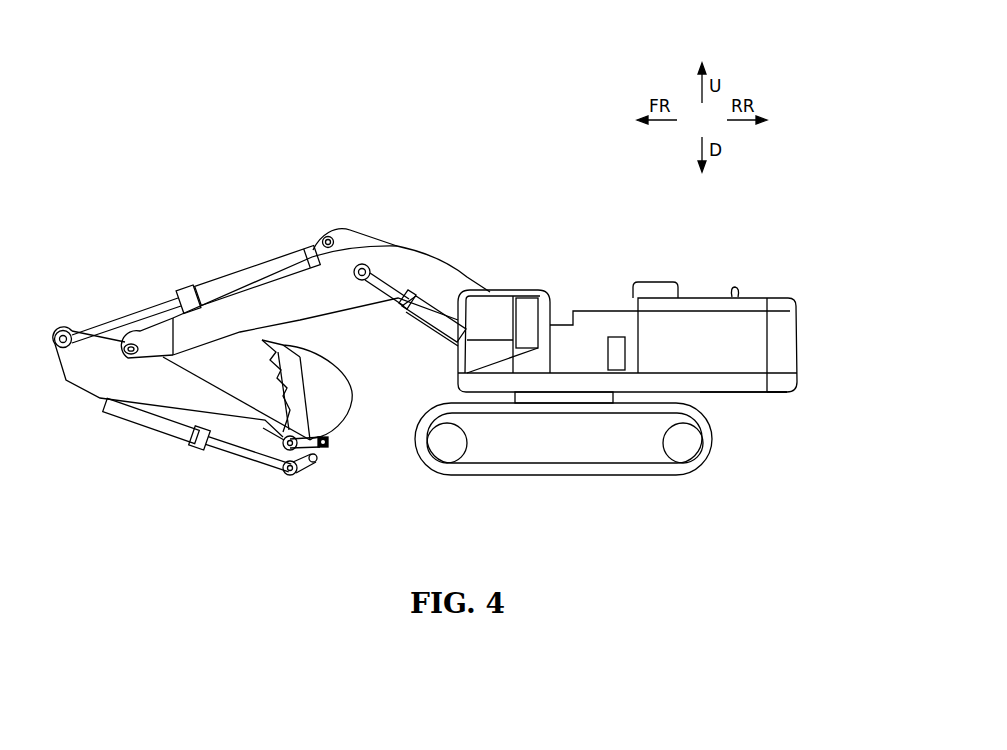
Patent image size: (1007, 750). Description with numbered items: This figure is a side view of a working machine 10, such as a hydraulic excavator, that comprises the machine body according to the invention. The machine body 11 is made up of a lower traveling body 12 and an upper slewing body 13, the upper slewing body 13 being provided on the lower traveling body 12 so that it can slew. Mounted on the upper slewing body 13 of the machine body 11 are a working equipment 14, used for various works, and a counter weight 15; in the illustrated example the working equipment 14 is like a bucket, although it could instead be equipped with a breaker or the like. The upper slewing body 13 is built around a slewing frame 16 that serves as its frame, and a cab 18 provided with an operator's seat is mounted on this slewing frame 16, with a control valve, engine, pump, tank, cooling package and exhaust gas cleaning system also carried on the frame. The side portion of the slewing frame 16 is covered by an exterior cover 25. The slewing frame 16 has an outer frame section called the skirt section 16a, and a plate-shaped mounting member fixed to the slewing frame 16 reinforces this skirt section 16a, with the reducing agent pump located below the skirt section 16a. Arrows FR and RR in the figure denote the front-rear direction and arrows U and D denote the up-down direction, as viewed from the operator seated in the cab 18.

The working machine 10 is at (568, 206).
The machine body 11 is at (804, 283).
The lower traveling body 12 is at (713, 452).
The upper slewing body 13 is at (693, 291).
The working equipment 14 is at (225, 251).
The counter weight 15 is at (797, 346).
The slewing frame 16 is at (462, 380).
The skirt section 16a is at (754, 394).
The cab 18 is at (527, 290).
The exterior cover 25 is at (750, 318).